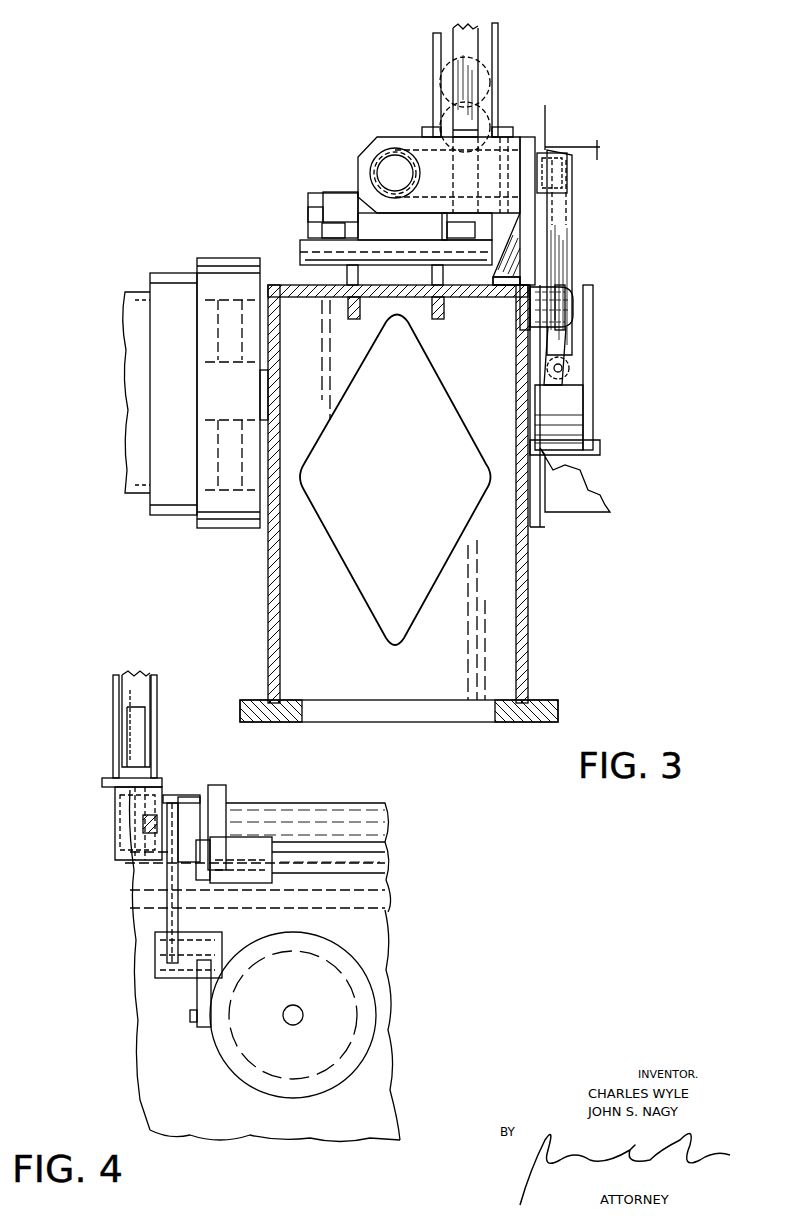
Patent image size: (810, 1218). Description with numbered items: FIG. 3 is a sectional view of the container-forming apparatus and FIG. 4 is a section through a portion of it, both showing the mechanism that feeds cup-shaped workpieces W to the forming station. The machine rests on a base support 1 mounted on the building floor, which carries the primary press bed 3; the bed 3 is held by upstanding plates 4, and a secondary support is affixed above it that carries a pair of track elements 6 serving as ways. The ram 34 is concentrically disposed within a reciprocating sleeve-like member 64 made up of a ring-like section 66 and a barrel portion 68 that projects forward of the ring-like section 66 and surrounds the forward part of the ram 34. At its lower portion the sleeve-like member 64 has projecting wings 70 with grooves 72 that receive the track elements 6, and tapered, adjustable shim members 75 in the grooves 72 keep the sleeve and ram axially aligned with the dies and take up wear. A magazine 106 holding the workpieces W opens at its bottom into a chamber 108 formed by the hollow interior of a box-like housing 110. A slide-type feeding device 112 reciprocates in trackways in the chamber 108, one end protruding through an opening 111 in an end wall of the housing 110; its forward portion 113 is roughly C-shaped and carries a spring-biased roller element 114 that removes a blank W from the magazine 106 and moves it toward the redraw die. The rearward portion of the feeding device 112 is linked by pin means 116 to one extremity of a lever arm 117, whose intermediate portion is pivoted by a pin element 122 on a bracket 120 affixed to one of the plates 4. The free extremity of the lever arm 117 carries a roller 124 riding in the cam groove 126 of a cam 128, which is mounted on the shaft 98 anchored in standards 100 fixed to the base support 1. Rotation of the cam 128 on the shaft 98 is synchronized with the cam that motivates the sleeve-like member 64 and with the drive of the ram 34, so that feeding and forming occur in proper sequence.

In FIG. 3, the base support 1 is at (462, 736).
In FIG. 3, the press bed 3 is at (220, 393).
In FIG. 3, the upstanding plates 4 is at (413, 335).
In FIG. 3, the track elements 6 is at (340, 215).
In FIG. 4, the track elements 6 is at (386, 862).
In FIG. 4, the ram 34 is at (336, 802).
In FIG. 4, the sleeve-like member 64 is at (215, 789).
In FIG. 4, the ring-like section 66 is at (228, 830).
In FIG. 4, the barrel portion 68 is at (190, 800).
In FIG. 3, the wings 70 is at (308, 220).
In FIG. 3, the grooves 72 is at (323, 200).
In FIG. 3, the shim members 75 is at (355, 200).
In FIG. 4, the shim members 75 is at (198, 866).
In FIG. 4, the shaft 98 is at (306, 1011).
In FIG. 4, the standards 100 is at (360, 1124).
In FIG. 3, the magazine 106 is at (433, 70).
In FIG. 3, the chamber 108 is at (500, 140).
In FIG. 3, the housing 110 is at (406, 134).
In FIG. 4, the housing 110 is at (100, 789).
In FIG. 4, the opening 111 is at (165, 797).
In FIG. 3, the feeding device 112 is at (543, 203).
In FIG. 4, the feeding device 112 is at (160, 921).
In FIG. 3, the forward portion 113 is at (470, 215).
In FIG. 3, the roller element 114 is at (440, 210).
In FIG. 3, the pin means 116 is at (567, 170).
In FIG. 4, the pin means 116 is at (142, 825).
In FIG. 3, the lever arm 117 is at (563, 243).
In FIG. 4, the lever arm 117 is at (168, 868).
In FIG. 3, the bracket 120 is at (560, 340).
In FIG. 4, the bracket 120 is at (208, 935).
In FIG. 3, the pin element 122 is at (565, 305).
In FIG. 3, the roller 124 is at (571, 371).
In FIG. 4, the roller 124 is at (224, 1040).
In FIG. 3, the cam groove 126 is at (590, 455).
In FIG. 3, the cam 128 is at (583, 408).
In FIG. 4, the cam 128 is at (345, 1045).
In FIG. 3, the workpiece W is at (480, 83).
In FIG. 4, the workpiece W is at (144, 745).